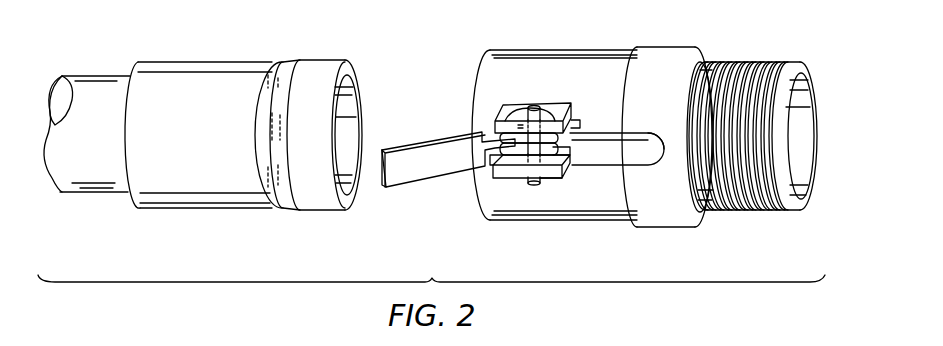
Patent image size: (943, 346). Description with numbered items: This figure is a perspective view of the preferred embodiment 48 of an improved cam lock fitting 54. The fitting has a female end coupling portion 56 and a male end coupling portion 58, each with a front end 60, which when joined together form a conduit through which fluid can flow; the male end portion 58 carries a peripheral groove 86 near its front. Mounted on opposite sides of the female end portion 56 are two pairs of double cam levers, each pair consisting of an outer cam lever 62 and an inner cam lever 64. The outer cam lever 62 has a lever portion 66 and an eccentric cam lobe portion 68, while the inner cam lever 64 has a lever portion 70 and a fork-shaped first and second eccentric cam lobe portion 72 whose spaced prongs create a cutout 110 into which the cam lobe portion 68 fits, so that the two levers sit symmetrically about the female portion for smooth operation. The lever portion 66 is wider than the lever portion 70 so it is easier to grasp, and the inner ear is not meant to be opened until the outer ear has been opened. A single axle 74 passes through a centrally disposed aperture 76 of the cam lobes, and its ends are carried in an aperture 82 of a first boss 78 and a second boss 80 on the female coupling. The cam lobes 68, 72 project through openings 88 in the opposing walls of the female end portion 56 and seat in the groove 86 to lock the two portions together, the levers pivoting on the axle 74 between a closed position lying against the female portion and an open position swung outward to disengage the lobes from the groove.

The preferred embodiment 48 is at (603, 122).
The cam lock fitting 54 is at (450, 58).
The female end coupling portion 56 is at (675, 52).
The male end coupling portion 58 is at (180, 62).
The front end 60 is at (470, 117).
The outer cam lever 62 is at (448, 159).
The inner cam lever 64 is at (628, 152).
The lever portion 66 is at (408, 176).
The eccentric cam lobe portion 68 is at (556, 156).
The lever portion 70 is at (657, 134).
The first and second eccentric cam lobe portion 72 is at (520, 116).
The axle 74 is at (534, 106).
The aperture 76 is at (548, 118).
The first boss 78 is at (510, 107).
The second boss 80 is at (505, 176).
The aperture 82 is at (549, 85).
The peripheral groove 86 is at (282, 70).
The openings 88 is at (580, 122).
The cutout 110 is at (558, 180).